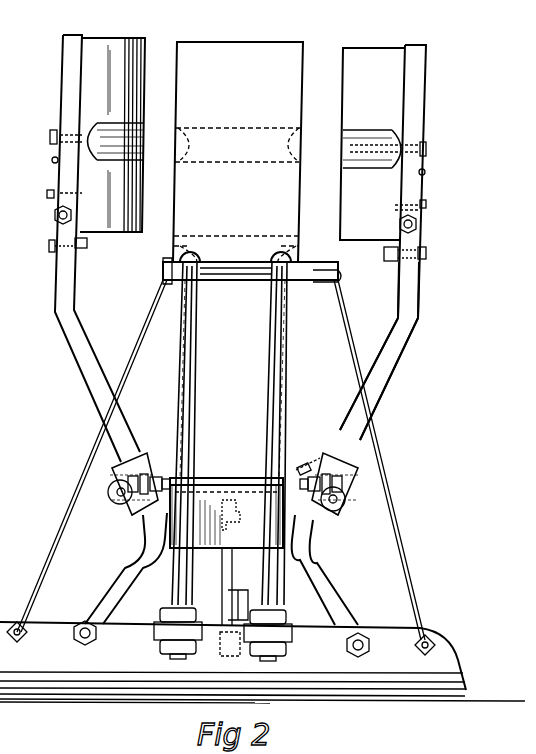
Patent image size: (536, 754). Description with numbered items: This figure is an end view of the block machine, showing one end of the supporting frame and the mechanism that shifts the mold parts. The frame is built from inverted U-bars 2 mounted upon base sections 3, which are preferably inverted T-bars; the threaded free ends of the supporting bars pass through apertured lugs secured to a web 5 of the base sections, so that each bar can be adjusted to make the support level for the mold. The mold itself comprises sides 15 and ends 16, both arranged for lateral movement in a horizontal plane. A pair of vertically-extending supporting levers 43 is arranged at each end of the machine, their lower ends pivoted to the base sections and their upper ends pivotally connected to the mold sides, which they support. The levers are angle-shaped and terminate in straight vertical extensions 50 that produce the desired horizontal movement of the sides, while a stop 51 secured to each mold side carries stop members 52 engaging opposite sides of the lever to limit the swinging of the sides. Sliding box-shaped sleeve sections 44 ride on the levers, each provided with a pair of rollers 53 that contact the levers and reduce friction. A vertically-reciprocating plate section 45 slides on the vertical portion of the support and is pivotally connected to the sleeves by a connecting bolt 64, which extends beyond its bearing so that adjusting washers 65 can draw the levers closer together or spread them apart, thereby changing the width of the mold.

The inverted U-bars 2 is at (195, 378).
The base sections 3 is at (467, 692).
The web 5 is at (445, 662).
The mold sides 15 is at (58, 80).
The mold ends 16 is at (275, 32).
The supporting levers 43 is at (398, 352).
The sliding sleeve sections 44 is at (345, 495).
The vertically-reciprocating plate sections 45 is at (213, 477).
The straight vertical extensions 50 is at (415, 283).
The stop 51 is at (442, 242).
The stop members 52 is at (428, 257).
The rollers 53 is at (335, 512).
The connecting bolt 64 is at (113, 482).
The adjusting washers 65 is at (303, 463).